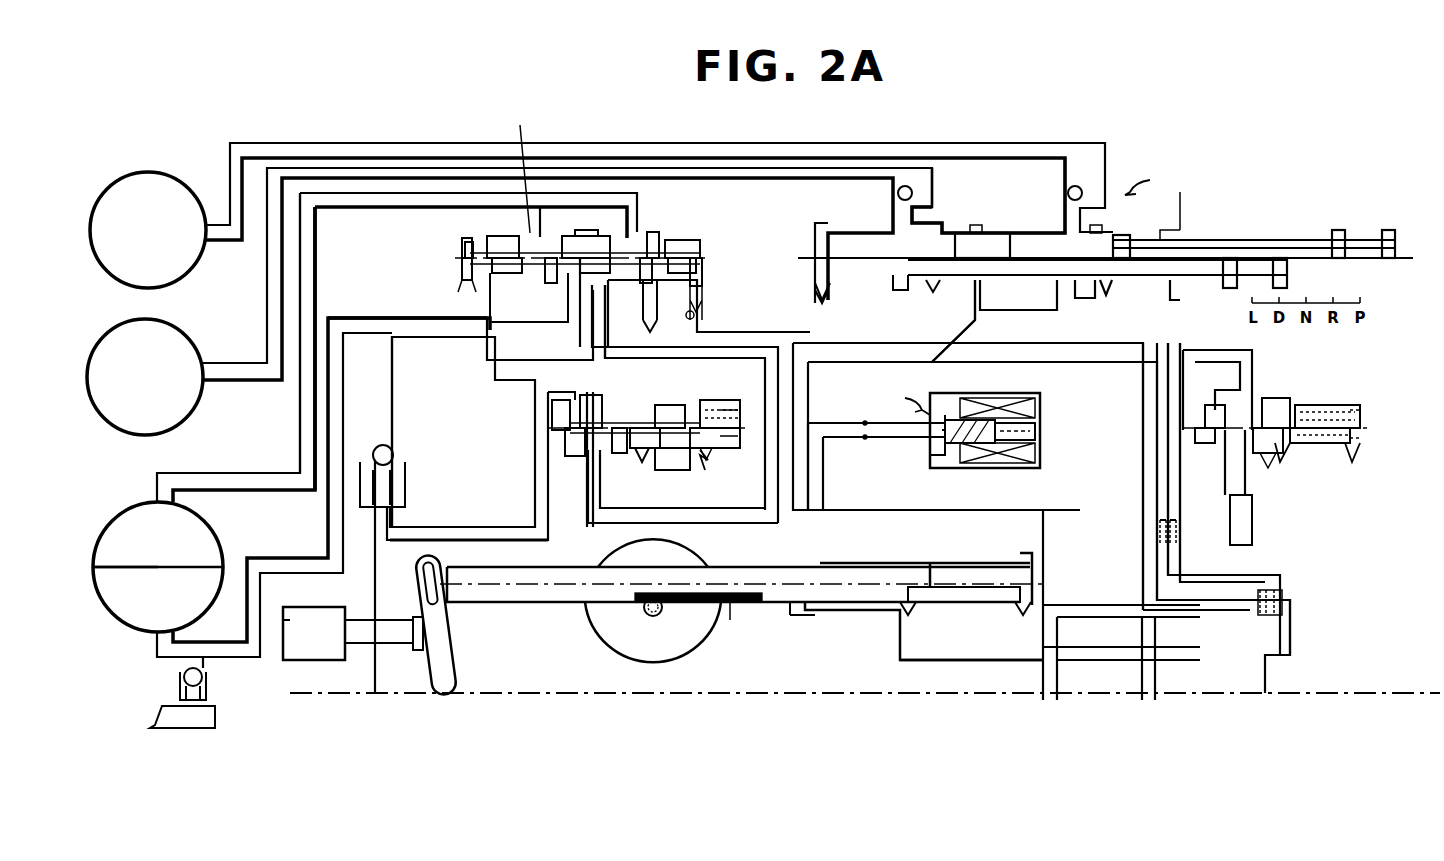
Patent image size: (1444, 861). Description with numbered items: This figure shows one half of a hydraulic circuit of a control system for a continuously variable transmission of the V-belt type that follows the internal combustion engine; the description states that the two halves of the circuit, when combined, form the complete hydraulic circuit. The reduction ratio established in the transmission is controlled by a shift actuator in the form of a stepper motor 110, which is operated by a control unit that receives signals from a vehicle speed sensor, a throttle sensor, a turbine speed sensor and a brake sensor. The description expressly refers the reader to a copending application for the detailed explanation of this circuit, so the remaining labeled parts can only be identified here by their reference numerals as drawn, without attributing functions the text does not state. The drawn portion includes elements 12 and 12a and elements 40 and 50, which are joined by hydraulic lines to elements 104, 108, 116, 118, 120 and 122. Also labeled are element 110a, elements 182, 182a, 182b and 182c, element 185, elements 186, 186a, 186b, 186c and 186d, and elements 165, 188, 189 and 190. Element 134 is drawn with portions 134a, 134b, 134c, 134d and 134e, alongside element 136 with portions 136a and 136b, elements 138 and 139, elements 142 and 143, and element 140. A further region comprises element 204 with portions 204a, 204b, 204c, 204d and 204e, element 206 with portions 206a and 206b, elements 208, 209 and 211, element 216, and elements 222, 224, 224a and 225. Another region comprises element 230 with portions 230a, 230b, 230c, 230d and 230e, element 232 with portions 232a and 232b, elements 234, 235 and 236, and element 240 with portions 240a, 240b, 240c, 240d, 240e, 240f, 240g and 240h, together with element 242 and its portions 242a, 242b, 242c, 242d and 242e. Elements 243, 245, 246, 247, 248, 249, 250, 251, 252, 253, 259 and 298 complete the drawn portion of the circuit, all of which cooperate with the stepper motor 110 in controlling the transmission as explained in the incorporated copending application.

The fluid coupling 12 is at (127, 628).
The lock-up chamber 12a is at (216, 535).
The forward clutch 40 is at (200, 330).
The reverse brake 50 is at (197, 198).
The manual valve 104 is at (1167, 177).
The governor valve 108 is at (867, 609).
The stepper motor 110 is at (585, 655).
The pump shaft 110a is at (660, 615).
The spring 116 is at (1280, 465).
The solenoid valve 118 is at (891, 400).
The shift valve 120 is at (718, 478).
The lock-up control valve 122 is at (420, 262).
The manual valve spool 134 is at (1180, 235).
The spool land 134a is at (844, 280).
The spool land 134b is at (930, 288).
The spool land 134c is at (930, 355).
The spool land 134d is at (1065, 298).
The spool land 134e is at (1127, 297).
The valve lever 136 is at (1277, 240).
The lever portion 136a is at (990, 240).
The lever portion 136b is at (1122, 242).
The valve housing 138 is at (988, 195).
The detent ball 139 is at (1090, 185).
The line pressure passage 140 is at (1150, 480).
The passage 142 is at (780, 178).
The detent ball 143 is at (913, 200).
The passage 165 is at (912, 522).
The governor shaft 182 is at (552, 598).
The governor plate 182a is at (772, 603).
The shaft portion 182b is at (945, 600).
The shaft portion 182c is at (738, 635).
The lever 185 is at (435, 588).
The governor sleeve 186 is at (970, 572).
The sleeve portion 186a is at (795, 618).
The sleeve portion 186b is at (820, 612).
The sleeve portion 186c is at (910, 618).
The sleeve portion 186d is at (1020, 618).
The passage 188 is at (795, 398).
The passage 189 is at (932, 662).
The passage 190 is at (823, 478).
The valve spool 204 is at (1335, 405).
The passage 204a is at (1225, 418).
The passage 204b is at (1225, 488).
The spool land 204c is at (1245, 490).
The spool land 204d is at (1285, 465).
The spool land 204e is at (1355, 465).
The valve plug 206 is at (1355, 420).
The plug land 206a is at (1222, 410).
The plug land 206b is at (1275, 412).
The spring 208 is at (1360, 430).
The passage 209 is at (1113, 360).
The spring 211 is at (1252, 535).
The passage 216 is at (1180, 410).
The plunger 222 is at (945, 460).
The solenoid coil 224 is at (1020, 400).
The solenoid core 224a is at (962, 420).
The valve rod 225 is at (1038, 430).
The valve spool 230 is at (712, 410).
The spool land 230a is at (565, 448).
The spool land 230b is at (600, 445).
The spool land 230c is at (614, 455).
The spool land 230d is at (645, 455).
The spool land 230e is at (718, 460).
The valve plug 232 is at (565, 435).
The plug land 232a is at (578, 418).
The plug land 232b is at (665, 420).
The spring 234 is at (705, 432).
The passage 235 is at (612, 300).
The plug land 236 is at (552, 410).
The valve spool 240 is at (695, 238).
The spool land 240a is at (460, 285).
The spool land 240b is at (490, 288).
The spool land 240c is at (525, 280).
The spool land 240d is at (560, 290).
The spool land 240e is at (590, 300).
The spool land 240f is at (695, 268).
The spool land 240g is at (655, 300).
The spool land 240h is at (705, 302).
The valve plug 242 is at (462, 262).
The plug land 242a is at (462, 247).
The plug land 242b is at (525, 250).
The plug land 242c is at (580, 240).
The plug land 242d is at (633, 240).
The plug land 242e is at (703, 248).
The passage 243 is at (318, 247).
The passage 245 is at (378, 400).
The passage 246 is at (487, 325).
The passage 247 is at (544, 170).
The passage 248 is at (640, 300).
The orifice 249 is at (700, 318).
The orifice 250 is at (1160, 546).
The check valve 251 is at (205, 680).
The orifice 252 is at (1283, 612).
The check valve 253 is at (395, 452).
The passage 259 is at (470, 545).
The oil cooler 298 is at (310, 608).